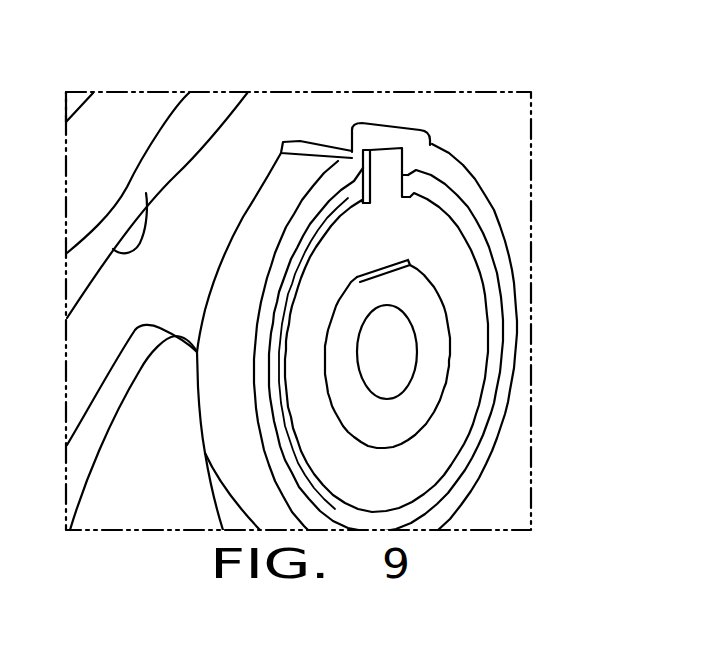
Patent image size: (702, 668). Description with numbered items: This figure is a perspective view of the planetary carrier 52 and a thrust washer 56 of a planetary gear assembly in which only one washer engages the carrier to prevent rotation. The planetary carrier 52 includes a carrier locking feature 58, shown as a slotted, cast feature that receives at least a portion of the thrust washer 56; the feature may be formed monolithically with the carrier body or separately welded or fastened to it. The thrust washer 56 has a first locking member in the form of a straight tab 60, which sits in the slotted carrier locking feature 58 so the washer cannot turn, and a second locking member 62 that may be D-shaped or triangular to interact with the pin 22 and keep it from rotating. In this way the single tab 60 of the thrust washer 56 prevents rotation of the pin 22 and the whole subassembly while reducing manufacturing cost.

The pin 22 is at (428, 367).
The planetary carrier 52 is at (200, 170).
The thrust washer 56 is at (450, 427).
The carrier locking feature 58 is at (402, 123).
The straight tab 60 is at (387, 167).
The second locking member 62 is at (401, 256).